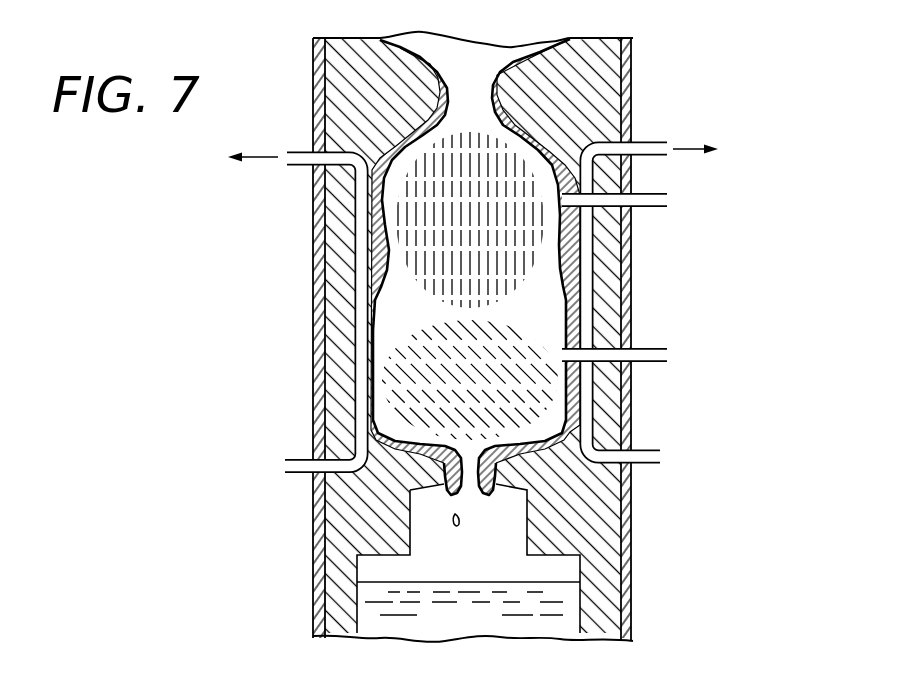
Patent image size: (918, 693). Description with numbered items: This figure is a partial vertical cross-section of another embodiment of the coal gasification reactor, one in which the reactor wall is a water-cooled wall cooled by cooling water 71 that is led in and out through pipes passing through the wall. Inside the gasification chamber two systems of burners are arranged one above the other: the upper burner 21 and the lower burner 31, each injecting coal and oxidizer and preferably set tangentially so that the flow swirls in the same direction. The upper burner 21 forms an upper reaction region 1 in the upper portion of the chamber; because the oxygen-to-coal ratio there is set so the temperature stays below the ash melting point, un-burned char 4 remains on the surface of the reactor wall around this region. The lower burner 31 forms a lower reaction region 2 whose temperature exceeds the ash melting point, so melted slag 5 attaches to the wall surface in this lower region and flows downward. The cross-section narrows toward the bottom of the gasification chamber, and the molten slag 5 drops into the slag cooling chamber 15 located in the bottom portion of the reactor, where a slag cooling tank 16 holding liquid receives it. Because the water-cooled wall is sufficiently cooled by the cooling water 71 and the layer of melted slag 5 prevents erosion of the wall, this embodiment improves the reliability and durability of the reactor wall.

The upper reaction region 1 is at (458, 229).
The lower reaction region 2 is at (480, 403).
The un-burned char 4 is at (558, 109).
The melted slag 5 is at (346, 510).
The slag cooling chamber 15 is at (487, 575).
The slag cooling tank 16 is at (477, 635).
The upper burner 21 is at (722, 206).
The lower burner 31 is at (713, 360).
The cooling water 71 is at (268, 466).